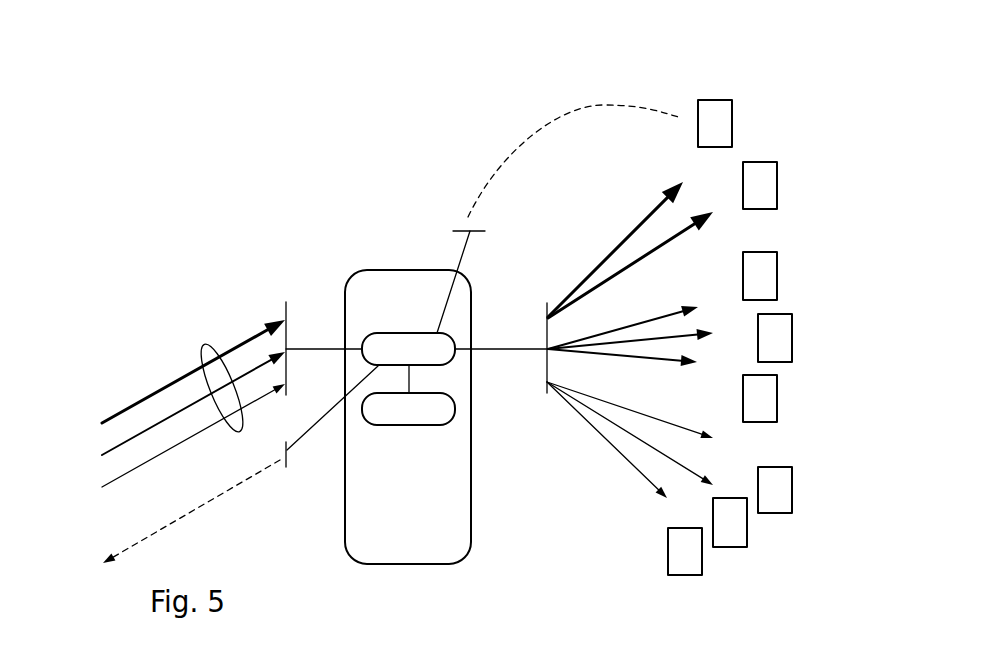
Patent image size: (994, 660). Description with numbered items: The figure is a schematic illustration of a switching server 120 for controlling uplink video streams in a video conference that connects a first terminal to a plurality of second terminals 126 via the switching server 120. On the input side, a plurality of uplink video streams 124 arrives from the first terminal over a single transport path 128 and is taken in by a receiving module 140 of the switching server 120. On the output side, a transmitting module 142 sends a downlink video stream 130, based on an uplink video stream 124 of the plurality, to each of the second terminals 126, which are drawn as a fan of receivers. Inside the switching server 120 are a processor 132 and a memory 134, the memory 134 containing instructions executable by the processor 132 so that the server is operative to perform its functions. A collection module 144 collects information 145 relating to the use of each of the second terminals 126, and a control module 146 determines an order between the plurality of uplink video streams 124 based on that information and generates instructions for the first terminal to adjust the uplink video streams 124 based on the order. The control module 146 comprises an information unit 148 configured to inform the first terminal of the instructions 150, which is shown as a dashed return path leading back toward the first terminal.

The switching server 120 is at (506, 544).
The uplink video streams 124 is at (170, 433).
The second terminals 126 is at (799, 262).
The single transport path 128 is at (204, 343).
The downlink video stream 130 is at (658, 242).
The processor 132 is at (455, 360).
The memory 134 is at (455, 422).
The receiving module 140 is at (288, 301).
The transmitting module 142 is at (545, 322).
The collection module 144 is at (460, 231).
The information 145 is at (523, 137).
The control module 146 is at (389, 308).
The information unit 148 is at (288, 466).
The instructions 150 is at (130, 545).